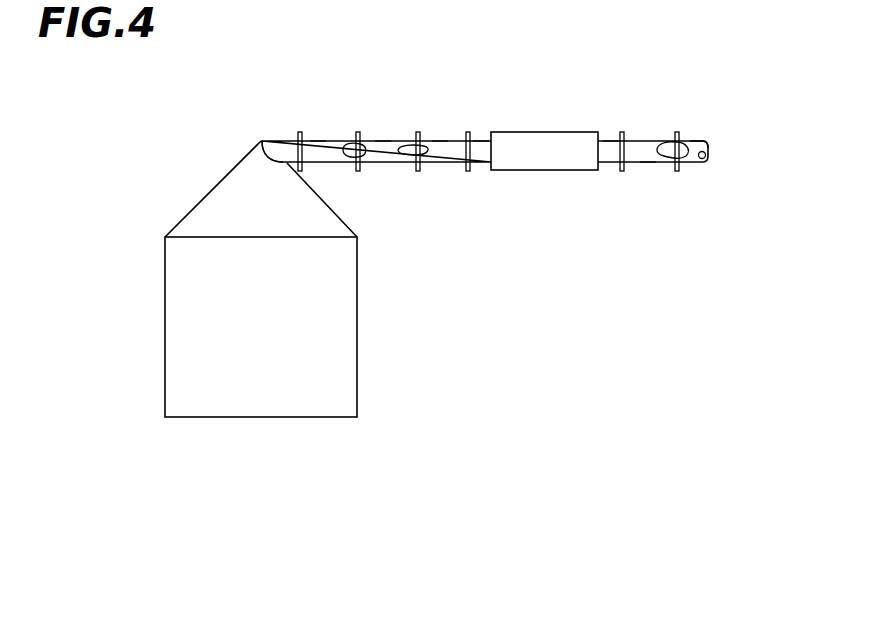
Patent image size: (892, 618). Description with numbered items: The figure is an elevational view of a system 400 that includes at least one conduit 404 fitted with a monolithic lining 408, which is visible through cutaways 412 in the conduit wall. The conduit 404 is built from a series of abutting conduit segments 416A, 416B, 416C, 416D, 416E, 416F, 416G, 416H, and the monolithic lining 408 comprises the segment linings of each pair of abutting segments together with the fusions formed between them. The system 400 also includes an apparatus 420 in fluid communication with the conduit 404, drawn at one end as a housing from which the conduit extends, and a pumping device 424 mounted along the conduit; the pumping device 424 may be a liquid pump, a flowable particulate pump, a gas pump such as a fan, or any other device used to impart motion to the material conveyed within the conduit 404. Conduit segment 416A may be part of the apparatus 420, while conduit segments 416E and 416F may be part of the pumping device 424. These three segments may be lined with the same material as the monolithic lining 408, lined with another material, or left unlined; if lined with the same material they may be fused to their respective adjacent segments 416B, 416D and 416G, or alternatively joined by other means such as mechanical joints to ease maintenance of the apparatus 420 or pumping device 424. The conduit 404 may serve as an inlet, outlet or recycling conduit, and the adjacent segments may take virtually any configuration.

The system 400 is at (625, 330).
The conduit 404 is at (597, 183).
The monolithic lining 408 is at (364, 157).
The cutaways 412 is at (345, 140).
The conduit segment 416A is at (280, 138).
The conduit segment 416B is at (318, 138).
The conduit segment 416C is at (383, 138).
The conduit segment 416D is at (440, 138).
The conduit segment 416E is at (481, 138).
The conduit segment 416F is at (611, 138).
The conduit segment 416G is at (648, 165).
The conduit segment 416H is at (698, 138).
The apparatus 420 is at (363, 352).
The pumping device 424 is at (557, 132).